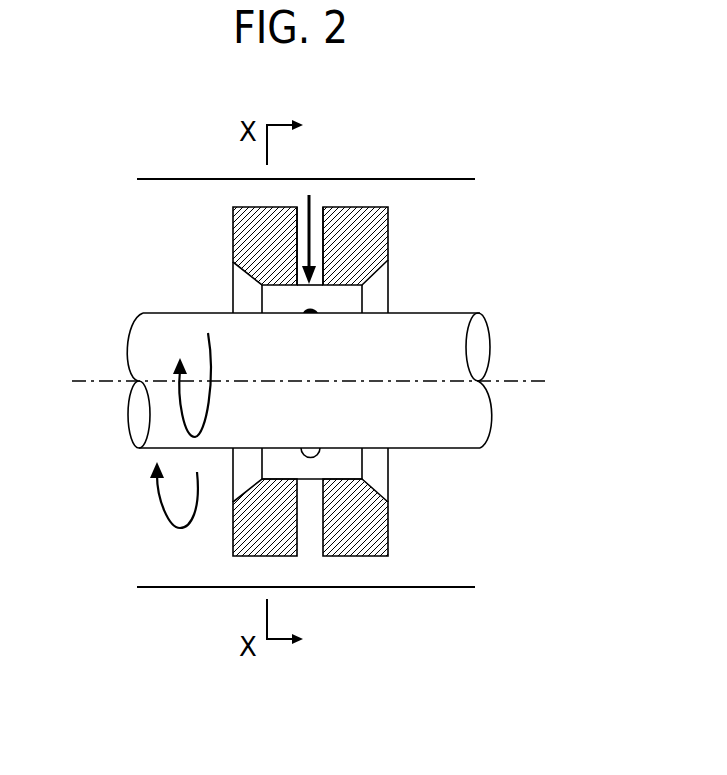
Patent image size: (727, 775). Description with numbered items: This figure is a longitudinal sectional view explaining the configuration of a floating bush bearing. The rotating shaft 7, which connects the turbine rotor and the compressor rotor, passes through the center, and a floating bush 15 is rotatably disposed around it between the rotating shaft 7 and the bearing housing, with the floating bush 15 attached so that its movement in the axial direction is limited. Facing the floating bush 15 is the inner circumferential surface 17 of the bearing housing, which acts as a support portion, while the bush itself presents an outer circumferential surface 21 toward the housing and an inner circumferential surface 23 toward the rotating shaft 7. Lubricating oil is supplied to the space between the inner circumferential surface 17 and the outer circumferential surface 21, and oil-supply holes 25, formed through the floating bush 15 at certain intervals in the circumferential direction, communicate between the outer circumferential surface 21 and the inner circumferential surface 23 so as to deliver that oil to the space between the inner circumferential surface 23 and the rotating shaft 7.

The rotating shaft 7 is at (450, 312).
The floating bush 15 is at (389, 530).
The inner circumferential surface of the bearing housing 17 is at (437, 180).
The outer circumferential surface of the floating bush 21 is at (258, 206).
The inner circumferential surface of the floating bush 23 is at (263, 287).
The oil-supply holes 25 is at (322, 222).